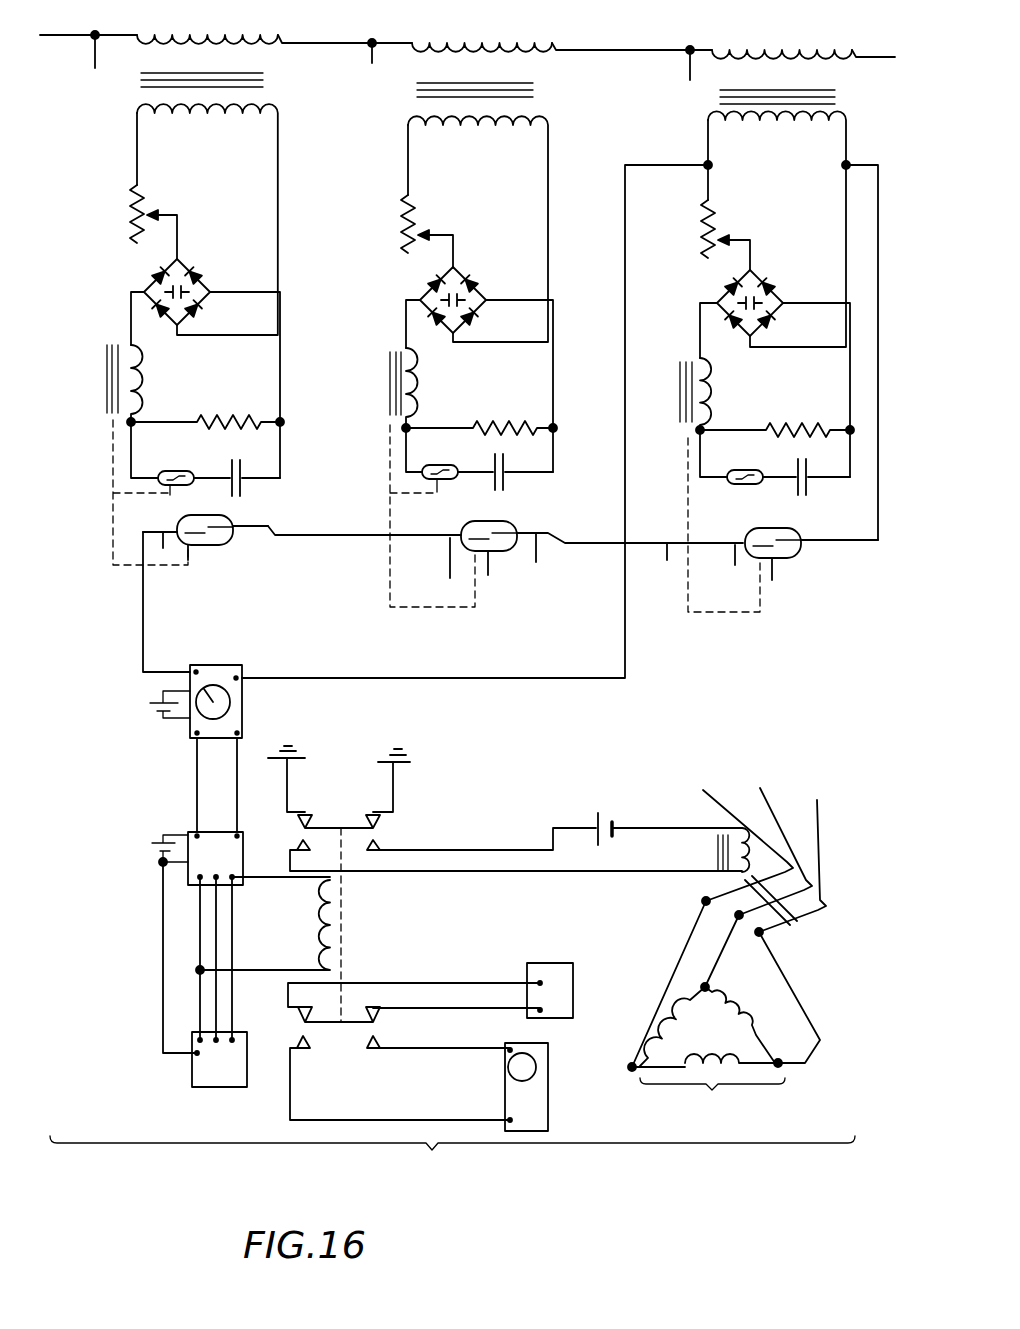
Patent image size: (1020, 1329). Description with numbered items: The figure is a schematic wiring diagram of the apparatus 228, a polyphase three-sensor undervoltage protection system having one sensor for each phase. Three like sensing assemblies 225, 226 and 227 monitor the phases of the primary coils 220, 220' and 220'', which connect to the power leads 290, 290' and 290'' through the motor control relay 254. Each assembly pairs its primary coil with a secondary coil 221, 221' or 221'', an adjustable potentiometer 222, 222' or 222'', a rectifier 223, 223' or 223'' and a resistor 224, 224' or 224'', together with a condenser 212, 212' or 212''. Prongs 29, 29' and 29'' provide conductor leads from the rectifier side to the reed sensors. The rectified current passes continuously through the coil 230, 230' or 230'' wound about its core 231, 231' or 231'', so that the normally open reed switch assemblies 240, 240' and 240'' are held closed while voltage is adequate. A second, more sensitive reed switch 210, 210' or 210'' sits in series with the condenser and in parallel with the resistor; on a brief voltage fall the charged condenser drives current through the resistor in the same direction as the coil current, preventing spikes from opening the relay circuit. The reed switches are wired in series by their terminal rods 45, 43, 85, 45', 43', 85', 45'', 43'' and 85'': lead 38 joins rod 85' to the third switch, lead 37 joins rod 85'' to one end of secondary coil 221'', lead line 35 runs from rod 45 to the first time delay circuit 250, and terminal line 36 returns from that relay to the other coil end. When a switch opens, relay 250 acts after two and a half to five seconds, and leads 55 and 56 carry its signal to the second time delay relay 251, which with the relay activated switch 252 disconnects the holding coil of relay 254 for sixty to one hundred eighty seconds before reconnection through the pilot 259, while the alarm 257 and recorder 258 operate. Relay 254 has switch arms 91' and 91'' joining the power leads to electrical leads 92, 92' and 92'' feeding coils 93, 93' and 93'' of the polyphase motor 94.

The primary coil 220 is at (207, 48).
The primary coil 220' is at (482, 55).
The primary coil 220'' is at (782, 62).
The power lead 290 is at (419, 466).
The power lead 290' is at (567, 477).
The power lead 290'' is at (733, 489).
The sensing assembly 225 is at (135, 148).
The sensing assembly 226 is at (404, 150).
The sensing assembly 227 is at (705, 150).
The secondary transformer coil 221 is at (207, 219).
The secondary coil 221' is at (478, 229).
The secondary coil 221'' is at (777, 229).
The adjustable potentiometer 222 is at (161, 215).
The adjustable potentiometer 222' is at (431, 221).
The adjustable potentiometer 222'' is at (732, 225).
The rectifier 223 is at (190, 287).
The rectifier 223' is at (466, 289).
The rectifier 223'' is at (767, 295).
The prong 29 is at (205, 384).
The prong 29' is at (479, 386).
The prong 29'' is at (775, 390).
The coil 230 is at (159, 383).
The coil 230' is at (435, 388).
The coil 230'' is at (733, 394).
The core 231 is at (87, 379).
The core 231' is at (369, 383).
The core 231'' is at (662, 392).
The resistor 224 is at (205, 409).
The resistor 224' is at (479, 415).
The resistor 224'' is at (775, 417).
The reed switch 210 is at (168, 464).
The reed switch 210' is at (435, 461).
The reed switch 210'' is at (736, 458).
The condenser 212 is at (234, 464).
The condenser 212' is at (488, 460).
The condenser 212'' is at (793, 464).
The reed switch assembly 240 is at (181, 527).
The reed switch assembly 240' is at (457, 531).
The reed switch assembly 240'' is at (747, 536).
The terminal rod 45 is at (161, 550).
The lead 43 is at (202, 562).
The terminal rod 85 is at (251, 545).
The terminal rod 45' is at (441, 571).
The lead 43' is at (493, 578).
The terminal rod 85' is at (537, 560).
The lead 45'' is at (733, 571).
The lead 43'' is at (783, 578).
The terminal rod 85'' is at (823, 569).
The lead line 35 is at (137, 592).
The terminal line 36 is at (415, 678).
The lead 37 is at (878, 166).
The lead 38 is at (666, 565).
The first time delay circuit 250 is at (238, 665).
The lead 55 is at (195, 753).
The lead 56 is at (240, 754).
The second time delay relay 251 is at (197, 858).
The electric relay activated switch 252 is at (343, 938).
The motor control relay 254 is at (712, 850).
The alarm 257 is at (540, 963).
The recorder 258 is at (510, 1097).
The pilot 259 is at (200, 1075).
The switch arm 91' is at (717, 922).
The switch arm 91'' is at (787, 946).
The electrical lead 92 is at (648, 984).
The electrical lead 92' is at (707, 955).
The electrical lead 92'' is at (805, 997).
The motor coil 93 is at (672, 1026).
The motor coil 93' is at (731, 1068).
The motor coil 93'' is at (740, 1024).
The polyphase motor 94 is at (712, 1096).
The apparatus 228 is at (452, 1156).